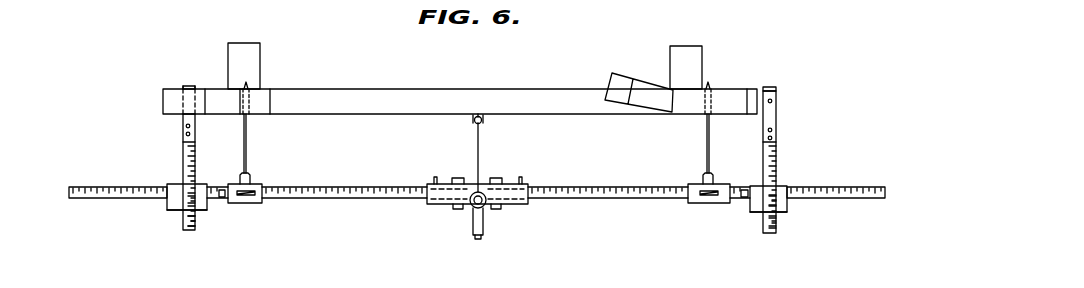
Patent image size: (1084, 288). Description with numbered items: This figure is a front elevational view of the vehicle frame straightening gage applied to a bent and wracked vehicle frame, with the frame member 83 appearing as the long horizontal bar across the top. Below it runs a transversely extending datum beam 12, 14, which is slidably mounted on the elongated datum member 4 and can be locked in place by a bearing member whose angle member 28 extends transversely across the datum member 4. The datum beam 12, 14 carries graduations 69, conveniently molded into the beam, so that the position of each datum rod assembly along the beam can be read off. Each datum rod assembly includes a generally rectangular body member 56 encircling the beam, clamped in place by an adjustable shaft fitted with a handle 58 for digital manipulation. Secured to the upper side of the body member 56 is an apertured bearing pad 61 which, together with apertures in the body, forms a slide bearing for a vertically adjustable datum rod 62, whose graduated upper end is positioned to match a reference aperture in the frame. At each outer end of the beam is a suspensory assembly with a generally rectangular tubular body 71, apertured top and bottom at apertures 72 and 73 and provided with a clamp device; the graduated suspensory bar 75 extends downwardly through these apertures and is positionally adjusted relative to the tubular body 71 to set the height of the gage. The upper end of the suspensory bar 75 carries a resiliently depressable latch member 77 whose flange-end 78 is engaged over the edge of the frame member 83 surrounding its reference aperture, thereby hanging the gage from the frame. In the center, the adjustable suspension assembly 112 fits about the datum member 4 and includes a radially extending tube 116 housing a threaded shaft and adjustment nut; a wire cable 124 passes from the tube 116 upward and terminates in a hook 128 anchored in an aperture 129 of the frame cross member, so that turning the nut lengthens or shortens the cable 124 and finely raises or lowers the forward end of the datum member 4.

The datum member 4 is at (470, 204).
The datum beam 12 is at (342, 199).
The datum beam 14 is at (110, 200).
The angle member 28 is at (527, 205).
The body member 56 is at (252, 203).
The handle 58 is at (250, 200).
The bearing pad 61 is at (252, 178).
The datum rod 62 is at (250, 140).
The graduations 69 is at (618, 200).
The tubular body 71 is at (183, 120).
The aperture 72 is at (177, 184).
The aperture 73 is at (178, 212).
The suspensory bar 75 is at (183, 155).
The latch member 77 is at (776, 114).
The flange-end 78 is at (189, 86).
The frame member 83 is at (524, 89).
The suspension assembly 112 is at (465, 209).
The tube 116 is at (484, 224).
The wire cable 124 is at (478, 160).
The hook 128 is at (484, 118).
The aperture 129 is at (474, 122).